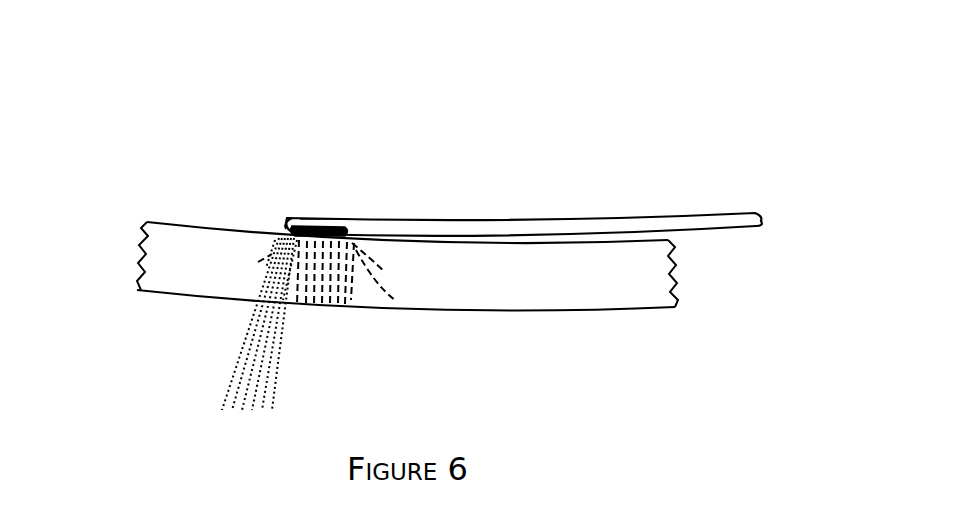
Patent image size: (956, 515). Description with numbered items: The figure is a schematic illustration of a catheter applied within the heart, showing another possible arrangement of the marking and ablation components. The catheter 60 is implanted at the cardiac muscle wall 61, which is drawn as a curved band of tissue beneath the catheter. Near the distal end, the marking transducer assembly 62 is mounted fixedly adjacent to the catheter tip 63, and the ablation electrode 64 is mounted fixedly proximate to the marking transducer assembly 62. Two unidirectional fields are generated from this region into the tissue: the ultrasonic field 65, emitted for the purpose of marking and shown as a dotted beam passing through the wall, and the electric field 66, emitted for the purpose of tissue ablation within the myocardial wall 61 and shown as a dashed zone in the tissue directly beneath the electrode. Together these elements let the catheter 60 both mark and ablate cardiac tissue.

The catheter 60 is at (622, 123).
The cardiac muscle wall 61 is at (407, 266).
The marking transducer assembly 62 is at (404, 102).
The catheter tip 63 is at (232, 102).
The ablation electrode 64 is at (507, 50).
The ultrasonic field 65 is at (258, 375).
The electric field 66 is at (465, 392).